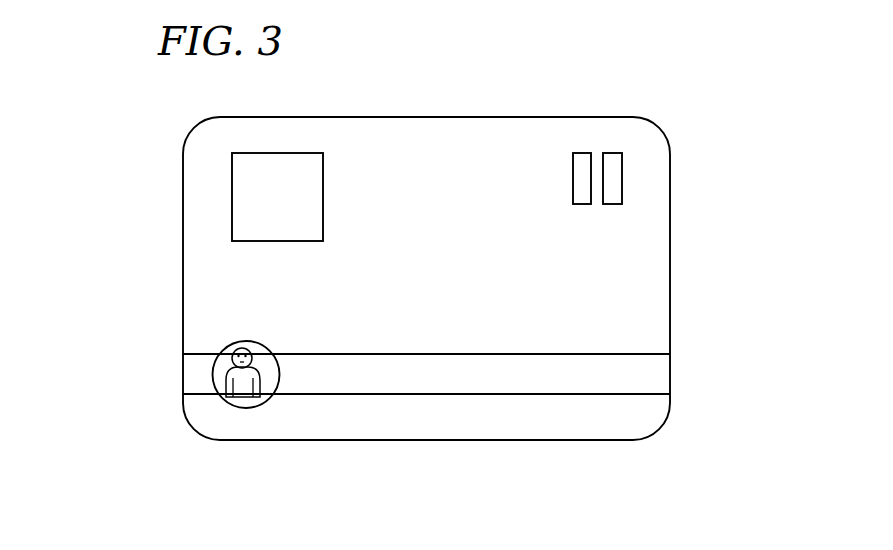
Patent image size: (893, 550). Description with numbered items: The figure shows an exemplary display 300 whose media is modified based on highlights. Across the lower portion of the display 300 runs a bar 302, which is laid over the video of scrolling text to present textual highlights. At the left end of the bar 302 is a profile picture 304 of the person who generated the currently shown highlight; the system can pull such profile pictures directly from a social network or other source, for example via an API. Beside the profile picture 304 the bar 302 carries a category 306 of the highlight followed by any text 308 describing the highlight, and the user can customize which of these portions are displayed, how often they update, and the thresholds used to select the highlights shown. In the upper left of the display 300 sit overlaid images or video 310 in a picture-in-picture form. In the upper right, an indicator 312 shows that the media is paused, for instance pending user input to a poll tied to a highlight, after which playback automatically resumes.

The display 300 is at (432, 116).
The bar 302 is at (173, 343).
The profile picture 304 is at (243, 408).
The category 306 is at (348, 394).
The text 308 is at (473, 394).
The overlaid images or video 310 is at (232, 183).
The indicator 312 is at (623, 174).